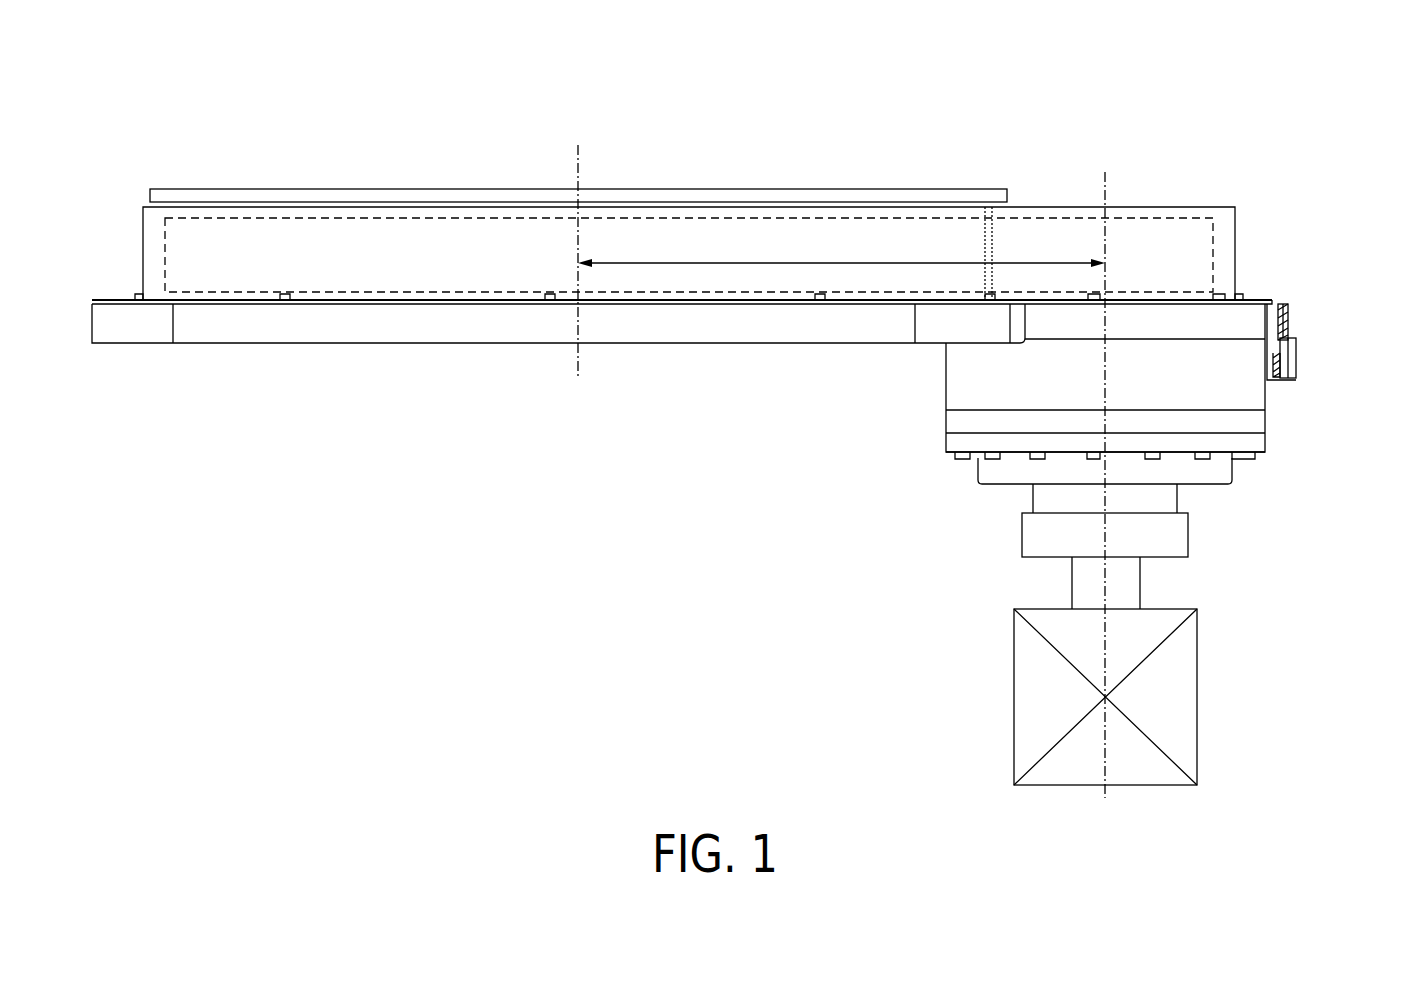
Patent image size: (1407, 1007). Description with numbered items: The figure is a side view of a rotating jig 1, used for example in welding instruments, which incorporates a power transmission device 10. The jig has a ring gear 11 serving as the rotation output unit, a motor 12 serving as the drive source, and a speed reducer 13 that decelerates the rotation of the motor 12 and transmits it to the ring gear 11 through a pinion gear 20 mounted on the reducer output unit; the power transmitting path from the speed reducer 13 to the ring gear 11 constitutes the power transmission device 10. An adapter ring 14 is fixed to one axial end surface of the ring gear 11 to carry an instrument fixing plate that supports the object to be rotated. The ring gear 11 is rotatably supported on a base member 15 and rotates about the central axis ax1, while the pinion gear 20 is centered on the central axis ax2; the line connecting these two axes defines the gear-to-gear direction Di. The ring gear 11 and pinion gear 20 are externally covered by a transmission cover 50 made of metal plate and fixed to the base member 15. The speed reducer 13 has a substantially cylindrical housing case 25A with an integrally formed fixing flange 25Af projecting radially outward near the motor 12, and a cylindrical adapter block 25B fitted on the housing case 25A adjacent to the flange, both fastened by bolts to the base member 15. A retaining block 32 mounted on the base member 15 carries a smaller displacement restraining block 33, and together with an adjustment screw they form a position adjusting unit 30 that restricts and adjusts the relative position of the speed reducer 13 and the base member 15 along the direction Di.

The rotating jig 1 is at (927, 112).
The power transmission device 10 is at (1300, 292).
The ring gear 11 is at (148, 246).
The motor 12 is at (1212, 706).
The speed reducer 13 is at (1168, 428).
The adapter ring 14 is at (250, 189).
The base member 15 is at (460, 330).
The pinion gear 20 is at (1180, 210).
The housing case 25A is at (1266, 425).
The fixing flange 25Af is at (1266, 437).
The adapter block 25B is at (1266, 392).
The position adjusting unit 30 is at (1336, 330).
The retaining block 32 is at (1290, 323).
The displacement restraining block 33 is at (1288, 362).
The transmission cover 50 is at (1045, 207).
The central axis of the first annular portion ax1 is at (580, 163).
The central axis of the second annular portion ax2 is at (1108, 193).
The gear-to-gear direction Di is at (798, 262).